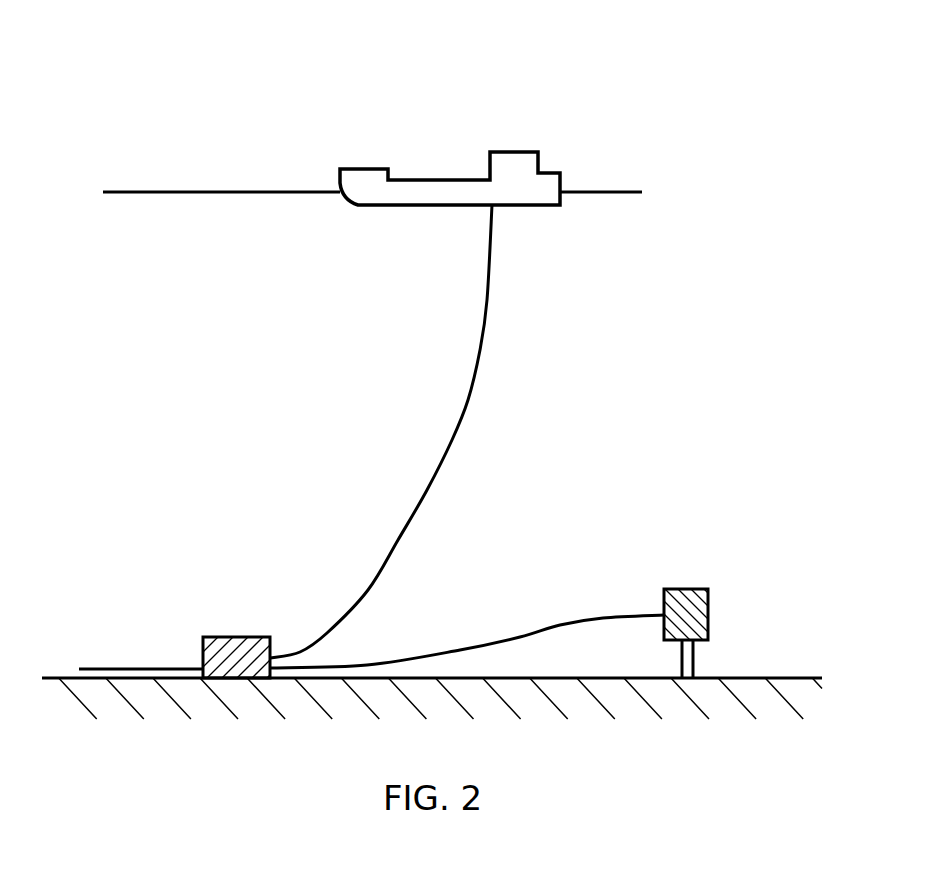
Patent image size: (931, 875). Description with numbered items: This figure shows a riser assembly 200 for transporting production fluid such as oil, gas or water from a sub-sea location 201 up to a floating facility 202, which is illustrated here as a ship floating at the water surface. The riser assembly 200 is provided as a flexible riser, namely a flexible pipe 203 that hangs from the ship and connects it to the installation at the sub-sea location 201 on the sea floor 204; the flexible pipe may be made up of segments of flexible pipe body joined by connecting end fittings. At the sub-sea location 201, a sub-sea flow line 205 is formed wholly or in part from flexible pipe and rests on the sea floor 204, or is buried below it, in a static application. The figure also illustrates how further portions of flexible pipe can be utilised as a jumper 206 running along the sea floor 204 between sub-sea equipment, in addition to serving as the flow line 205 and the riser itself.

The riser assembly 200 is at (516, 337).
The sub-sea location 201 is at (235, 636).
The floating facility 202 is at (362, 168).
The flexible pipe 203 is at (428, 488).
The sea floor 204 is at (758, 677).
The sub-sea flow line 205 is at (147, 668).
The jumper 206 is at (593, 618).